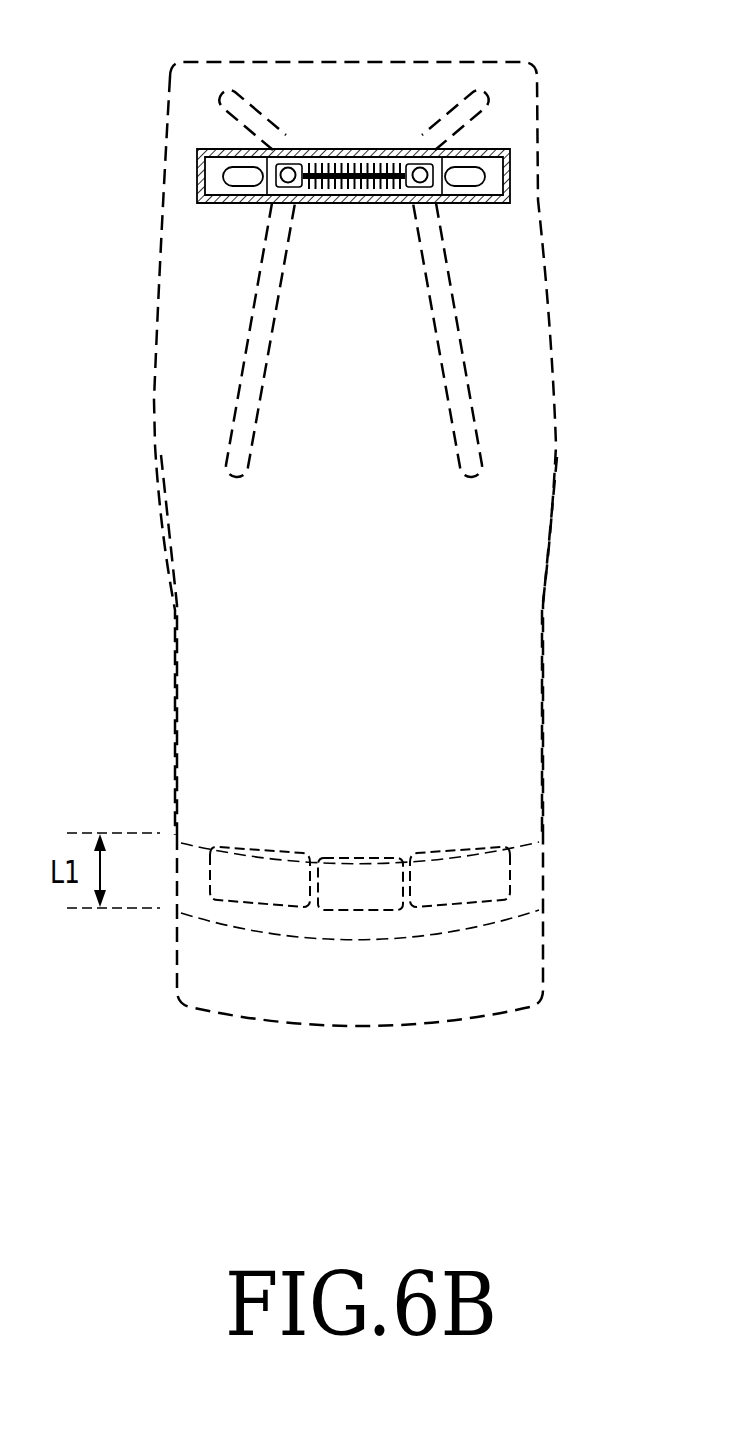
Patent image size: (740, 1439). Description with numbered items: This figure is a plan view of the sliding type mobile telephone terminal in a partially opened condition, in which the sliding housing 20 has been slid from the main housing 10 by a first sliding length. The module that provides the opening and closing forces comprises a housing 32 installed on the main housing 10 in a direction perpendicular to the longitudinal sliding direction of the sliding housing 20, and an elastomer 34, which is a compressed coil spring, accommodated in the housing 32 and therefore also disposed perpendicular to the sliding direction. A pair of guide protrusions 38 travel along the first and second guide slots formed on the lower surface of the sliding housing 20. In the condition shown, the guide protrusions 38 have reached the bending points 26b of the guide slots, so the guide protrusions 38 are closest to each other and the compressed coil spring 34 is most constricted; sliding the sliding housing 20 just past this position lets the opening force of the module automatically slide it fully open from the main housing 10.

The main housing 10 is at (498, 960).
The sliding housing 20 is at (498, 682).
The bending points 26b is at (227, 178).
The housing 32 is at (215, 157).
The elastomer 34 is at (370, 157).
The guide protrusions 38 is at (288, 157).